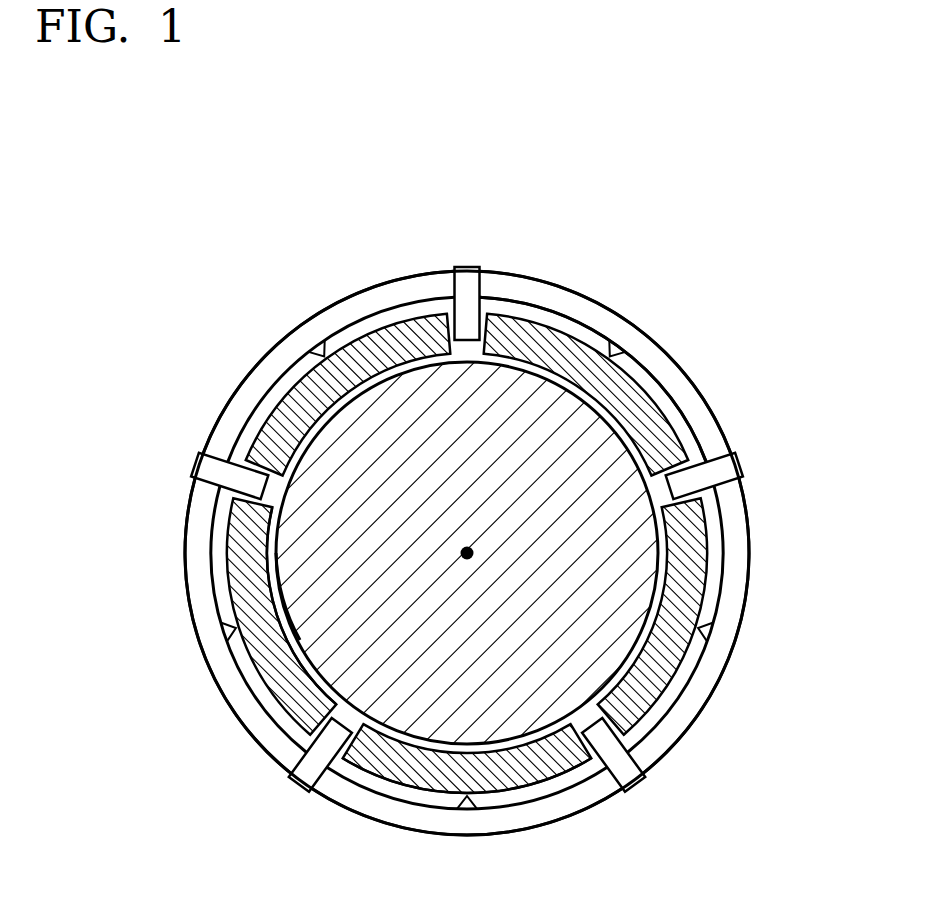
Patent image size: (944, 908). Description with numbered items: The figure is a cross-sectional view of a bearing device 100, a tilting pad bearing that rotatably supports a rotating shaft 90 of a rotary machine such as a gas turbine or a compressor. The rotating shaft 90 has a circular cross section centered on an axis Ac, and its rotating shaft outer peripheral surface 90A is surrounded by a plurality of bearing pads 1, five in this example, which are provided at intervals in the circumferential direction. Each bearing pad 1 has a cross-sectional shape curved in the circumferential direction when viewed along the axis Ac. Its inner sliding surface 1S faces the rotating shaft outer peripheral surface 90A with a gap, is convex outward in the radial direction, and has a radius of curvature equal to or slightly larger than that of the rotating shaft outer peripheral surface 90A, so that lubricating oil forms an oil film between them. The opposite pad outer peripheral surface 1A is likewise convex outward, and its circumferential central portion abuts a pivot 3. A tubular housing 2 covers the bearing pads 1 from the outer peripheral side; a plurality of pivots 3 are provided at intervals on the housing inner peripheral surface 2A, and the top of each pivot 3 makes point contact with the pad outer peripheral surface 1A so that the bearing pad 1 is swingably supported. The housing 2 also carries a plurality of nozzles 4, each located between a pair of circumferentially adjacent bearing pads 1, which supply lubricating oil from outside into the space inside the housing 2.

The bearing device 100 is at (141, 158).
The bearing pad 1 is at (273, 673).
The pad outer peripheral surface 1A is at (542, 780).
The sliding surface 1S is at (330, 663).
The housing 2 is at (665, 368).
The housing inner peripheral surface 2A is at (567, 335).
The pivot 3 is at (223, 628).
The nozzle 4 is at (470, 282).
The rotating shaft 90 is at (325, 465).
The rotating shaft outer peripheral surface 90A is at (273, 570).
The axis Ac is at (467, 553).